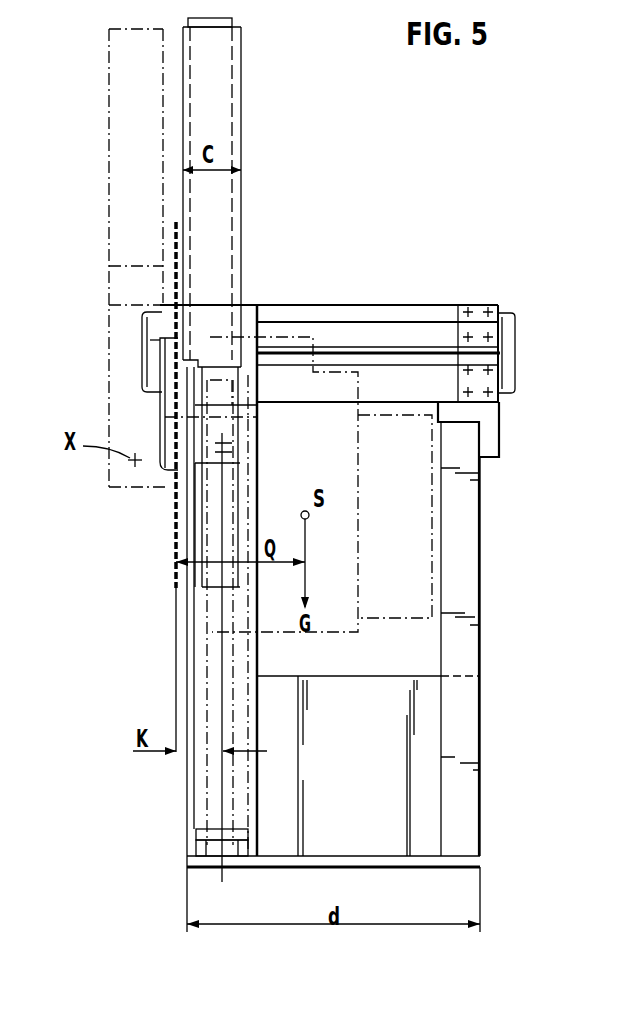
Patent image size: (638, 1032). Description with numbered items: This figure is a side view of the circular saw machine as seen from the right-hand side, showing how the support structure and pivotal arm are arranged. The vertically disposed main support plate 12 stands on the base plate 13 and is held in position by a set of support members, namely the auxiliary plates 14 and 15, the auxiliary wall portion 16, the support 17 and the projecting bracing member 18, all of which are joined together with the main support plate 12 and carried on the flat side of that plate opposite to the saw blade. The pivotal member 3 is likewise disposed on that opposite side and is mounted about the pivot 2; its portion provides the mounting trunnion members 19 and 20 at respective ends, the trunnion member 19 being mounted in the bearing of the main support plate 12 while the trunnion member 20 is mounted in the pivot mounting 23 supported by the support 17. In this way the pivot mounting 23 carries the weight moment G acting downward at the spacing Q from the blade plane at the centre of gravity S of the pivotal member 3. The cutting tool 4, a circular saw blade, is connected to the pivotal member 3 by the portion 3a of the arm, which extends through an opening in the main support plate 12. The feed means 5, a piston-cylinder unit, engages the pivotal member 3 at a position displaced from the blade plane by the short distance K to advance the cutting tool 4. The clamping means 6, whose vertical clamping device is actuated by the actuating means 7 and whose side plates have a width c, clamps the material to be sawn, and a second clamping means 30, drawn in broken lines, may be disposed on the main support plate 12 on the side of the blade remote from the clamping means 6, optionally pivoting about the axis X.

The pivot 2 is at (493, 355).
The pivotal member 3 is at (397, 607).
The portion of the pivotal arm 3a is at (168, 476).
The cutting tool 4 is at (172, 538).
The feed means 5 is at (206, 798).
The clamping means 6 is at (300, 130).
The actuating means 7 is at (223, 202).
The main support plate 12 is at (188, 677).
The base plate 13 is at (467, 861).
The auxiliary plate 14 is at (428, 732).
The auxiliary plate 15 is at (195, 780).
The auxiliary wall portion 16 is at (248, 447).
The support 17 is at (467, 518).
The bracing member 18 is at (347, 323).
The mounting trunnion member 19 is at (148, 330).
The mounting trunnion member 20 is at (503, 332).
The pivot mounting 23 is at (478, 328).
The second clamping means 30 is at (96, 128).